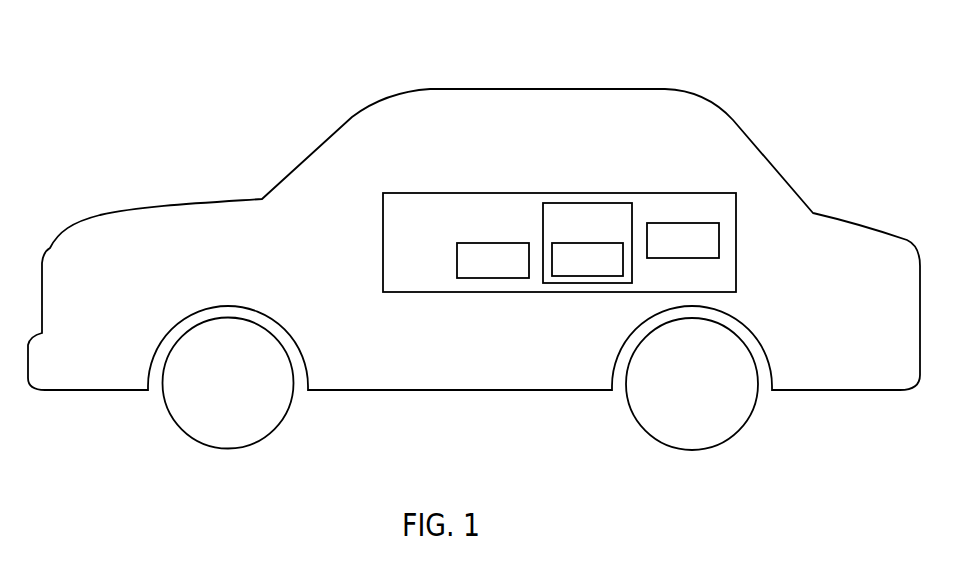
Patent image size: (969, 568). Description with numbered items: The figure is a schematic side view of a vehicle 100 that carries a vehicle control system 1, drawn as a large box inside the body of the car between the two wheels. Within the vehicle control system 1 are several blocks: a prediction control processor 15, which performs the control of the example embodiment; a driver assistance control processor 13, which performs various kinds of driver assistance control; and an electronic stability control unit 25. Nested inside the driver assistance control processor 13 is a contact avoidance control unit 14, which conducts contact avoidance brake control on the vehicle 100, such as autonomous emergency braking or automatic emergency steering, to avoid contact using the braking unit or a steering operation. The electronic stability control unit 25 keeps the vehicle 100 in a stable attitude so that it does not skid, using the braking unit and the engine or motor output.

The vehicle 100 is at (583, 90).
The vehicle control system 1 is at (559, 242).
The driver assistance control processor 13 is at (587, 243).
The contact avoidance control unit 14 is at (587, 259).
The prediction control processor 15 is at (493, 260).
The electronic stability control (ESC) unit 25 is at (683, 240).